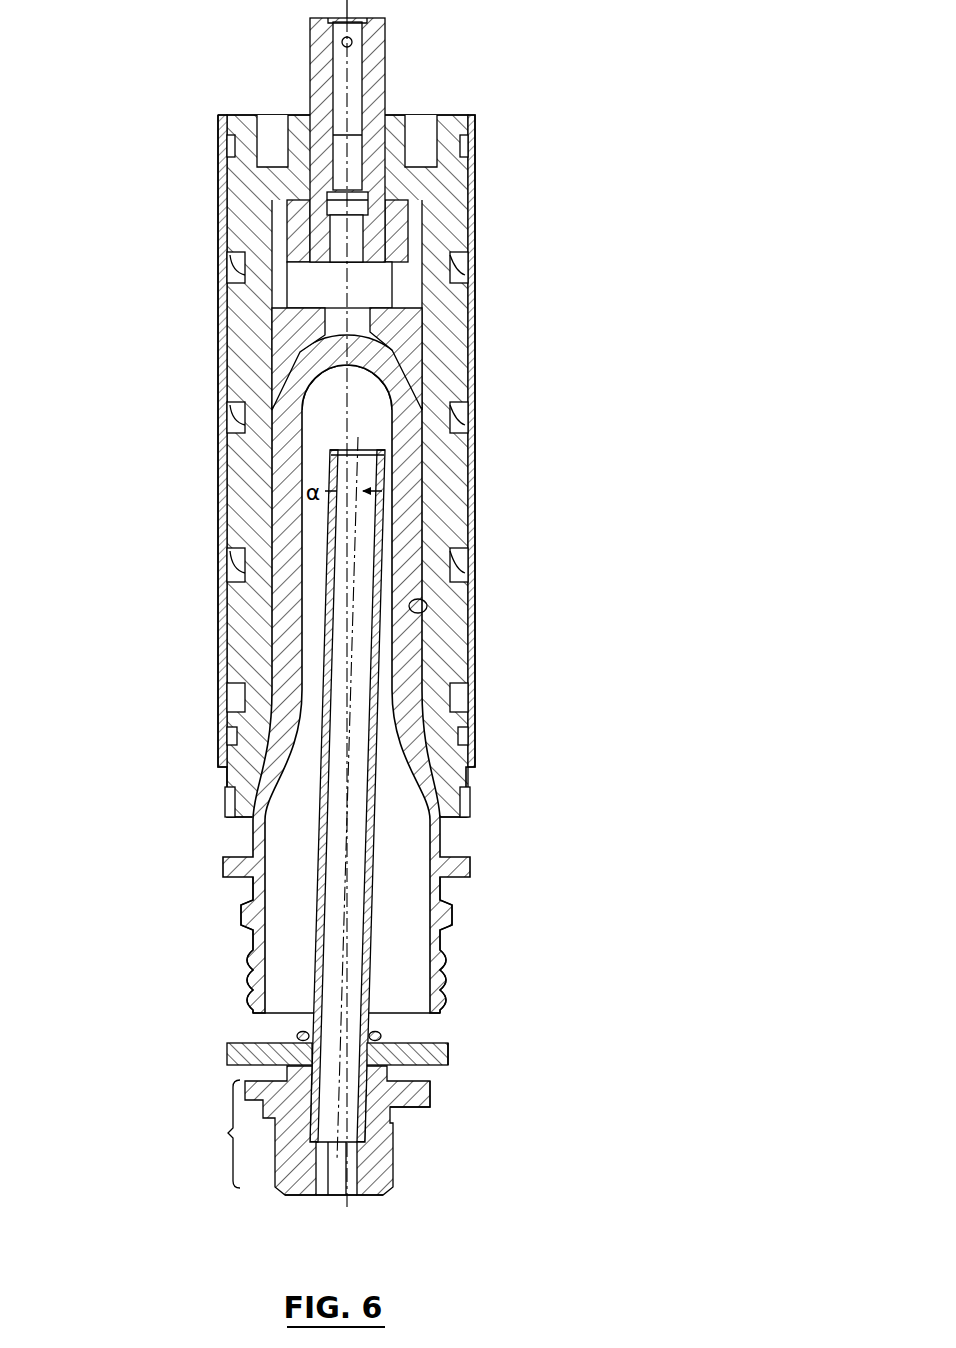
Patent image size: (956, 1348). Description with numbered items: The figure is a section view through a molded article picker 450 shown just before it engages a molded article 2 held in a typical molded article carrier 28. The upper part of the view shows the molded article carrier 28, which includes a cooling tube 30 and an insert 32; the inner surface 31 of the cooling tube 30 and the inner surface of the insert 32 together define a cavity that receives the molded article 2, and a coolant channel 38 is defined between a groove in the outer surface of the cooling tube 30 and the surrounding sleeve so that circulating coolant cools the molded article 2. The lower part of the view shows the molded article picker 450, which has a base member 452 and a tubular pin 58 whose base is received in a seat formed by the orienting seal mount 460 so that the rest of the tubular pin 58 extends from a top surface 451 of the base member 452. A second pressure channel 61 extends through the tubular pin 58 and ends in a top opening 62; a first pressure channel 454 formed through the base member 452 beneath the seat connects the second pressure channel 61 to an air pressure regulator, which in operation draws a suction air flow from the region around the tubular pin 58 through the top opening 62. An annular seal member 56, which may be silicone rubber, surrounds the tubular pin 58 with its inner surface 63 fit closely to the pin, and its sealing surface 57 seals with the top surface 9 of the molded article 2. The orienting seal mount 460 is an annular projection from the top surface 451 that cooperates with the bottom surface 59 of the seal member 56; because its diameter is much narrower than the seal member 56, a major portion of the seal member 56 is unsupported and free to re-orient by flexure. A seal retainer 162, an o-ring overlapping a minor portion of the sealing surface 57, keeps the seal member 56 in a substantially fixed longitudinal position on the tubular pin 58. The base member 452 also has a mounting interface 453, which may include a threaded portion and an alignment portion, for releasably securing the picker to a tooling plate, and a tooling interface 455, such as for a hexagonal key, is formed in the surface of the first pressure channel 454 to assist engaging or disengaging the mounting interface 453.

The molded article carrier 28 is at (510, 117).
The cooling tube 30 is at (449, 316).
The insert 32 is at (410, 338).
The top opening 62 is at (322, 446).
The molded article 2 is at (410, 525).
The inner surface 31 is at (418, 612).
The coolant channel 38 is at (460, 697).
The second pressure channel 61 is at (360, 833).
The tubular pin 58 is at (367, 902).
The inner surface 63 is at (367, 1008).
The top surface 9 is at (436, 1021).
The seal retainer 162 is at (300, 1034).
The top surface 451 is at (378, 1040).
The orienting seal mount 460 is at (232, 1048).
The sealing surface 57 is at (437, 1044).
The seal member 56 is at (449, 1057).
The mounting interface 453 is at (243, 1130).
The bottom surface 59 is at (432, 1092).
The base member 452 is at (398, 1105).
The first pressure channel 454 is at (333, 1178).
The tooling interface 455 is at (352, 1180).
The molded article picker 450 is at (457, 1194).